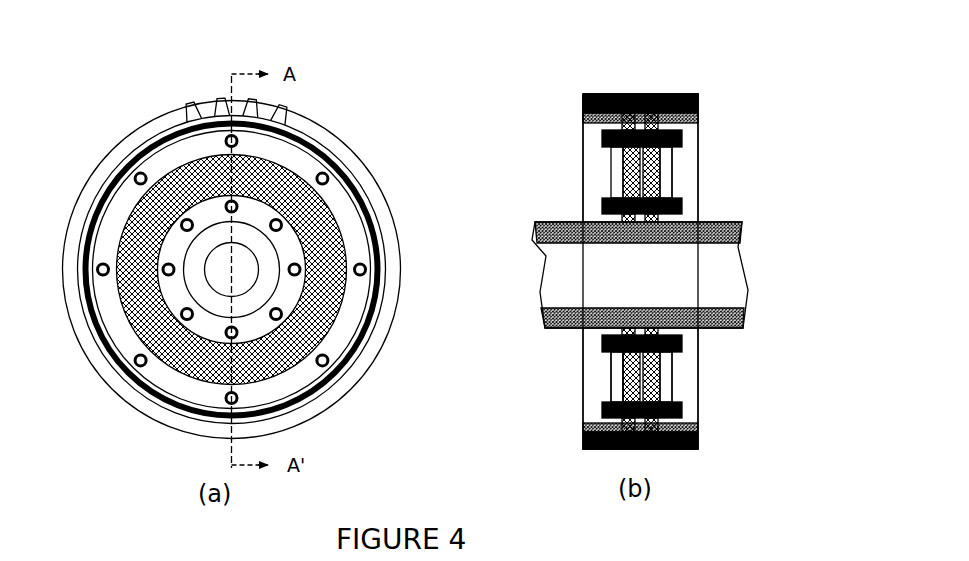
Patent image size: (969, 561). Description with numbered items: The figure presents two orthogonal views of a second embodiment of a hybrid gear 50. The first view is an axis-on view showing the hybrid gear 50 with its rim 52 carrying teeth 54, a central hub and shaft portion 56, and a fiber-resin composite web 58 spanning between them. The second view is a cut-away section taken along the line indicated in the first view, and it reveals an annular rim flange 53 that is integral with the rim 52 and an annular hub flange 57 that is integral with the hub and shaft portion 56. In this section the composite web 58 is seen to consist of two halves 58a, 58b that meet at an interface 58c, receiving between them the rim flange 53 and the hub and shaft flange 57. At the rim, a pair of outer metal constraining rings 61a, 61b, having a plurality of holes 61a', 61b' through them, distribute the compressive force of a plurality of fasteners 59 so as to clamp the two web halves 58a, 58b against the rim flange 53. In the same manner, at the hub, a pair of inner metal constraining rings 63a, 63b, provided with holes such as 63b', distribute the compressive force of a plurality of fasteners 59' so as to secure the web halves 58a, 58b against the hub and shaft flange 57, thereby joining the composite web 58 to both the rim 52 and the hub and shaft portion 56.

The hybrid gear 50 is at (156, 84).
The rim 52 is at (583, 118).
The annular rim flange 53 is at (670, 155).
The teeth 54 is at (583, 97).
The hub and shaft portion 56 is at (199, 288).
The annular hub flange 57 is at (625, 185).
The fiber-resin composite web 58 is at (338, 347).
The web half 58a is at (611, 378).
The web half 58b is at (671, 384).
The interface 58c is at (612, 365).
The fasteners 59 is at (417, 284).
The fasteners 59' is at (437, 337).
The outer metal constraining ring 61a is at (640, 63).
The holes 61a' is at (561, 83).
The outer metal constraining ring 61b is at (410, 250).
The holes 61b' is at (748, 96).
The inner metal constraining ring 63a is at (610, 194).
The inner metal constraining ring 63b is at (446, 256).
The holes 63b' is at (737, 172).